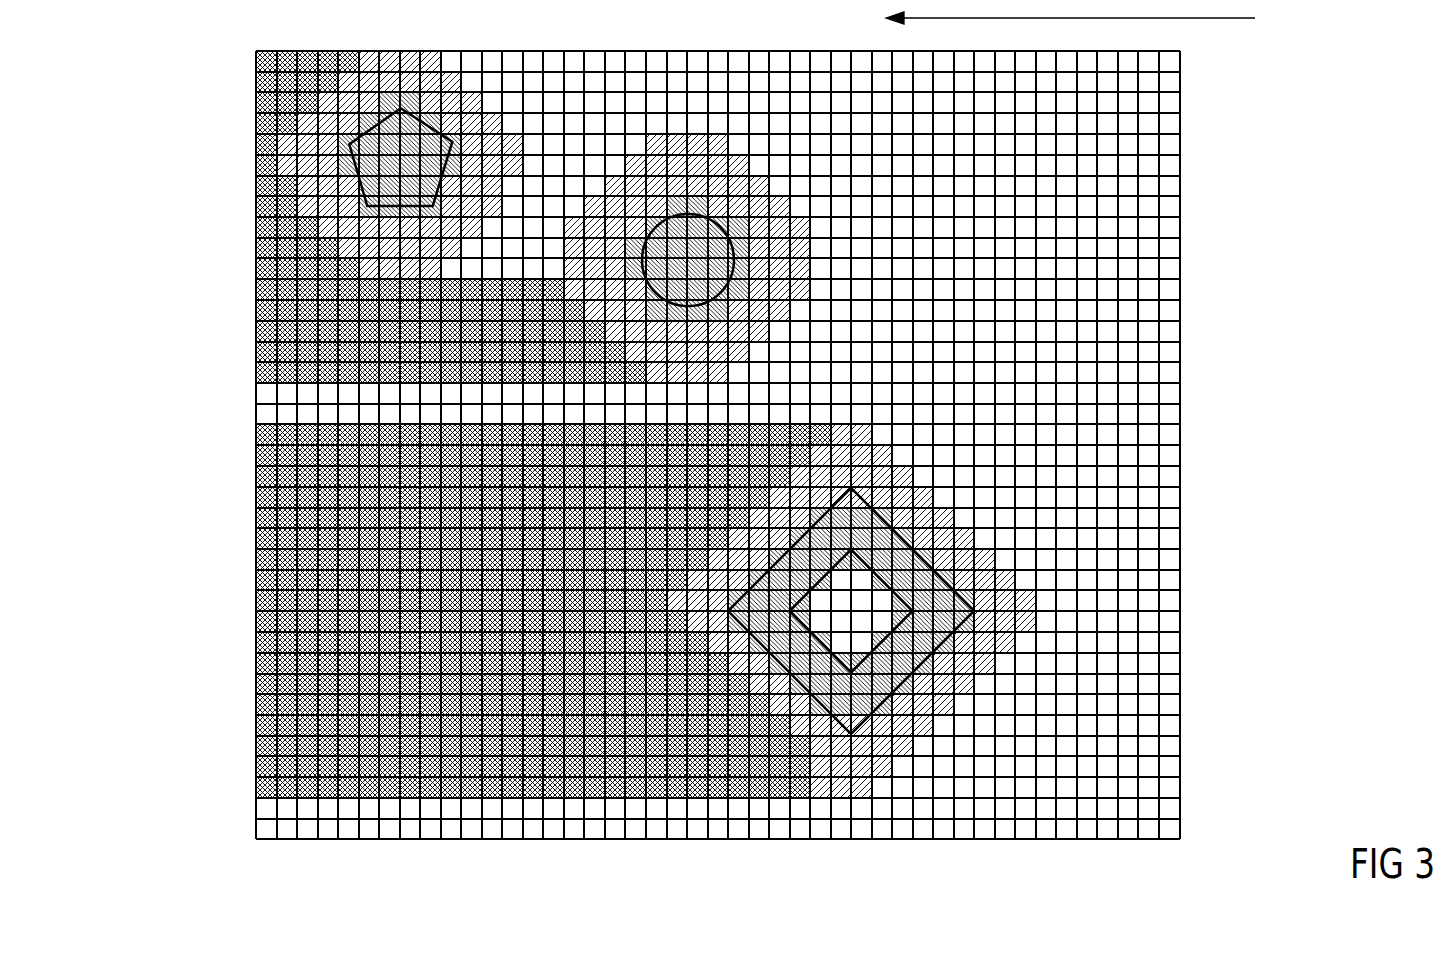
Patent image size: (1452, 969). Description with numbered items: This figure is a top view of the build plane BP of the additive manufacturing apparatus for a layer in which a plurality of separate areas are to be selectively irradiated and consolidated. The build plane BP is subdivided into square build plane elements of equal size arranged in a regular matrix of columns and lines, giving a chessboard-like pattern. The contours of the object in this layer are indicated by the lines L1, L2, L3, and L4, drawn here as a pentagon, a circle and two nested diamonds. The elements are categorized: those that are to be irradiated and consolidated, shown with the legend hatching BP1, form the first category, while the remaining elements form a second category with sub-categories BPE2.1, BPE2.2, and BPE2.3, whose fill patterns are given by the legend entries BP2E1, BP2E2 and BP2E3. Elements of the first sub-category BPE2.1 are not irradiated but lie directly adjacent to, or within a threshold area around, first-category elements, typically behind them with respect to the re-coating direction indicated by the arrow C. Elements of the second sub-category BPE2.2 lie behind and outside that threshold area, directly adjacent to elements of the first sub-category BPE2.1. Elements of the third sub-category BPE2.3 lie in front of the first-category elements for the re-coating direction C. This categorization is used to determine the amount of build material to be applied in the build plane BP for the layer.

The build plane BP is at (1186, 452).
The first category build plane elements BP1 is at (328, 42).
The first sub-category build plane elements BP2E1 is at (857, 424).
The second sub-category build plane elements BP2E2 is at (847, 424).
The third sub-category build plane elements BP2E3 is at (1365, 324).
The first sub-category BPE2.1 is at (287, 144).
The second sub-category BPE2.2 is at (266, 315).
The third sub-category BPE2.3 is at (553, 80).
The contour line L1 is at (432, 125).
The contour line L2 is at (692, 213).
The contour line L3 is at (757, 640).
The contour line L4 is at (836, 655).
The re-coating direction arrow C is at (1215, 20).